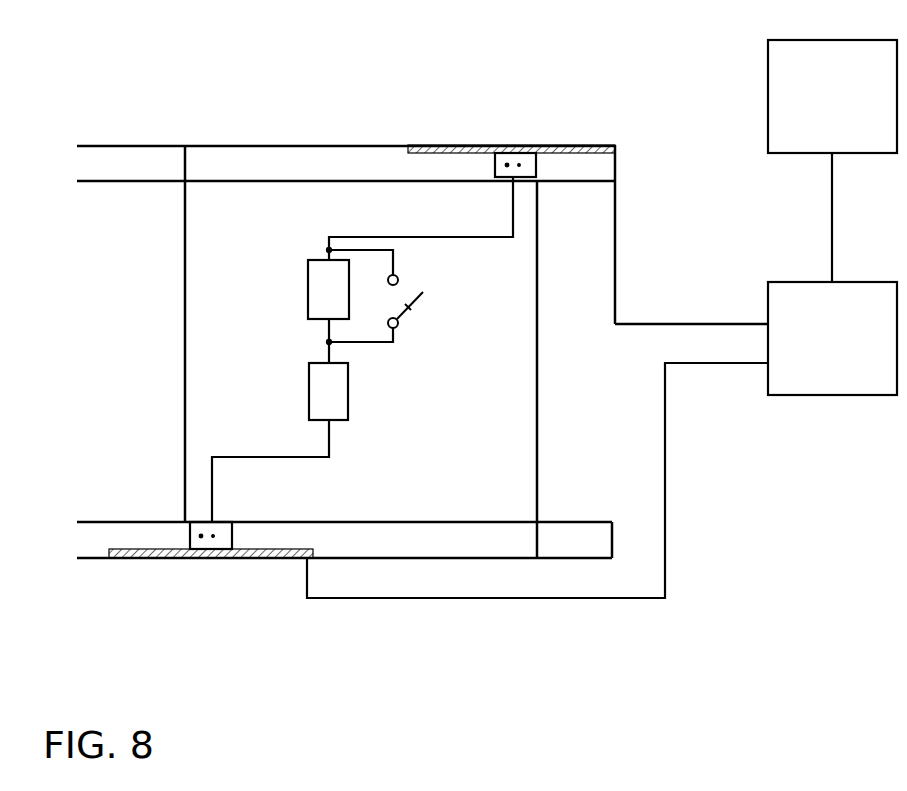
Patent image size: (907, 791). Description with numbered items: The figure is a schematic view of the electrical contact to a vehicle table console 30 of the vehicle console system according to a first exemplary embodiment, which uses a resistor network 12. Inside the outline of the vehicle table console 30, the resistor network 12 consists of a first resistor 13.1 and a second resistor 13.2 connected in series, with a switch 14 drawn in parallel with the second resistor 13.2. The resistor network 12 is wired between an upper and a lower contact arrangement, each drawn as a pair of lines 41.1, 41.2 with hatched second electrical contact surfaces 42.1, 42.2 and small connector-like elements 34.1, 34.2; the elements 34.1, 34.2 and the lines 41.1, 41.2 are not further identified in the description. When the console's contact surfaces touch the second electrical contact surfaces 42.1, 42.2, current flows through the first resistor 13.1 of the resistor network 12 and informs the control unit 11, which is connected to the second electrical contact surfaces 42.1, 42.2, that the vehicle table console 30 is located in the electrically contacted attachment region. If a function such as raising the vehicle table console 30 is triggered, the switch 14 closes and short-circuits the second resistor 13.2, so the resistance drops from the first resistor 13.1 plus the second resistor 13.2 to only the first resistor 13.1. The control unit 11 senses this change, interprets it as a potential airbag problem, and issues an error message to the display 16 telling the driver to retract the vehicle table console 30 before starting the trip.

The control unit 11 is at (845, 350).
The resistor network 12 is at (310, 321).
The first resistor 13.1 is at (322, 396).
The second resistor 13.2 is at (322, 297).
The switch 14 is at (419, 297).
The display 16 is at (848, 109).
The vehicle table console 30 is at (462, 449).
The first plug connector 34.1 is at (505, 165).
The second plug connector 34.2 is at (199, 549).
The first supply line 41.1 is at (262, 146).
The second supply line 41.2 is at (407, 558).
The second electrical contact surface 42.1 is at (580, 148).
The second electrical contact surface 42.2 is at (148, 558).